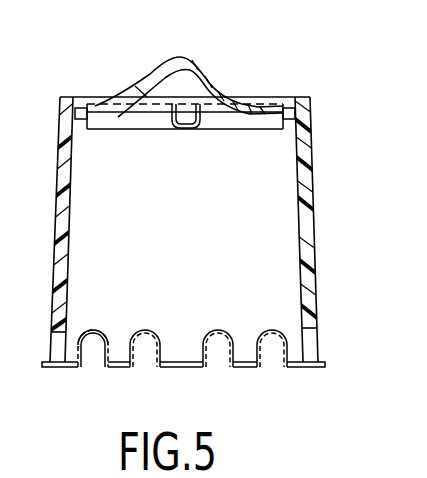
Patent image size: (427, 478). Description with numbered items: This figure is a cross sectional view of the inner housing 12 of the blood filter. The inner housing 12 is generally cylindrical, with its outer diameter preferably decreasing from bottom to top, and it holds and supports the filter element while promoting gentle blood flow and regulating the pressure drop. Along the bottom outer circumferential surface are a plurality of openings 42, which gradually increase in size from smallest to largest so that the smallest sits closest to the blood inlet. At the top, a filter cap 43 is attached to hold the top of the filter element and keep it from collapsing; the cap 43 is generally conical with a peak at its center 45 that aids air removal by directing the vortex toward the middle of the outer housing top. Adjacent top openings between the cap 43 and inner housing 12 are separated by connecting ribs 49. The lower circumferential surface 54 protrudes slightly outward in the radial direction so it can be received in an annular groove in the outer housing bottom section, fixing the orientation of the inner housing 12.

The inner housing 12 is at (331, 237).
The openings 42 is at (146, 356).
The filter cap 43 is at (216, 77).
The peak at center of cap 45 is at (193, 58).
The connecting ribs 49 is at (200, 120).
The lower circumferential surface 54 is at (69, 367).